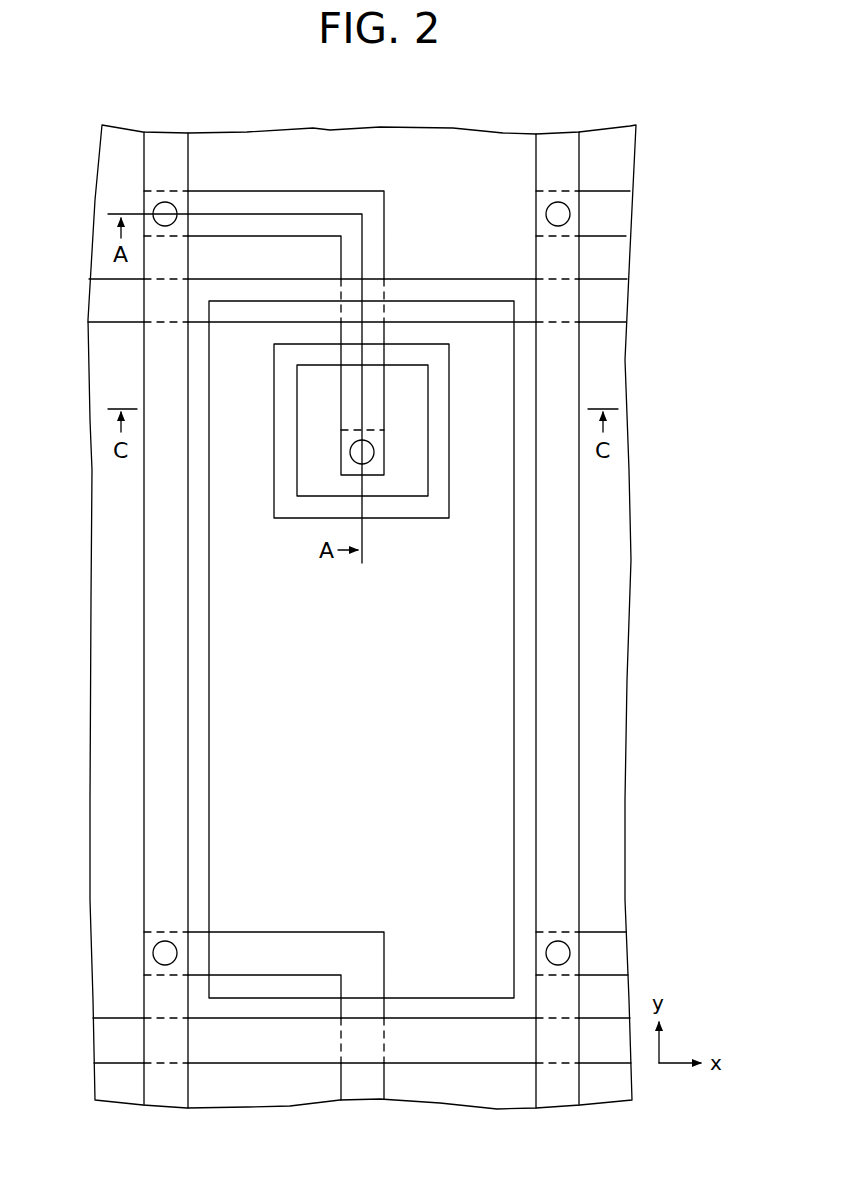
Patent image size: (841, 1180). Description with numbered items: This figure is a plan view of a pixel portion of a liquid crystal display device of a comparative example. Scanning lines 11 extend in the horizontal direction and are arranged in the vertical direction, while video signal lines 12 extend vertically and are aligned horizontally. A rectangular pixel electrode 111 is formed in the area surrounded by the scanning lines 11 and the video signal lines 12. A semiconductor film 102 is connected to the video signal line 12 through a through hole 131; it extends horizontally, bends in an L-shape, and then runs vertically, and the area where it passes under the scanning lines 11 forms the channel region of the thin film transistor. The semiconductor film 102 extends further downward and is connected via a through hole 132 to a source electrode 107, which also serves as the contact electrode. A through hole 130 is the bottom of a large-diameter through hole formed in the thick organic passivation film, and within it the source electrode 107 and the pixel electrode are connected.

The scanning line 11 is at (98, 305).
The video signal line 12 is at (152, 155).
The semiconductor film 102 is at (384, 222).
The source electrode 107 is at (275, 430).
The pixel electrode 111 is at (495, 648).
The through hole 130 is at (303, 497).
The through hole 131 is at (172, 203).
The through hole 132 is at (367, 462).